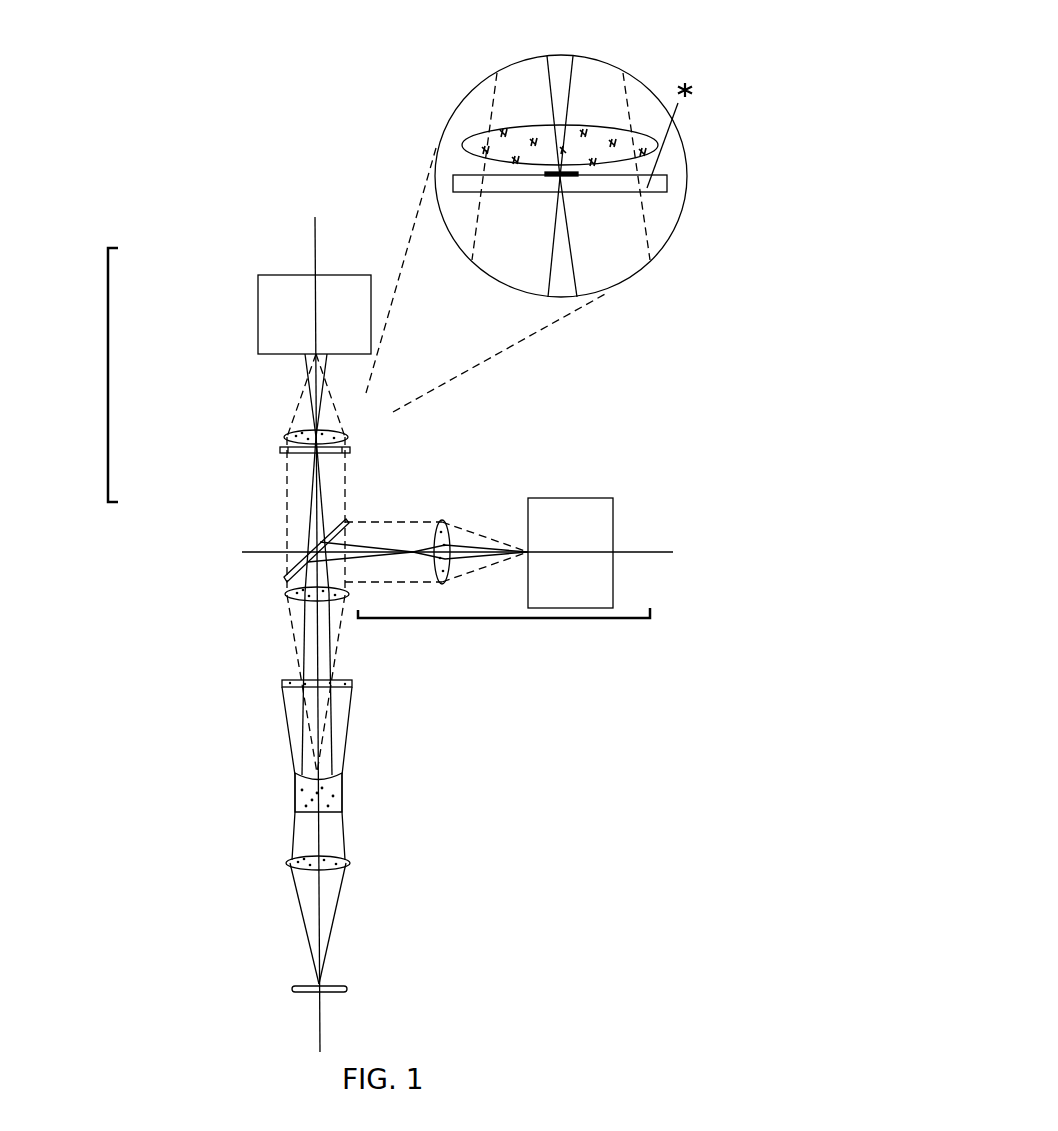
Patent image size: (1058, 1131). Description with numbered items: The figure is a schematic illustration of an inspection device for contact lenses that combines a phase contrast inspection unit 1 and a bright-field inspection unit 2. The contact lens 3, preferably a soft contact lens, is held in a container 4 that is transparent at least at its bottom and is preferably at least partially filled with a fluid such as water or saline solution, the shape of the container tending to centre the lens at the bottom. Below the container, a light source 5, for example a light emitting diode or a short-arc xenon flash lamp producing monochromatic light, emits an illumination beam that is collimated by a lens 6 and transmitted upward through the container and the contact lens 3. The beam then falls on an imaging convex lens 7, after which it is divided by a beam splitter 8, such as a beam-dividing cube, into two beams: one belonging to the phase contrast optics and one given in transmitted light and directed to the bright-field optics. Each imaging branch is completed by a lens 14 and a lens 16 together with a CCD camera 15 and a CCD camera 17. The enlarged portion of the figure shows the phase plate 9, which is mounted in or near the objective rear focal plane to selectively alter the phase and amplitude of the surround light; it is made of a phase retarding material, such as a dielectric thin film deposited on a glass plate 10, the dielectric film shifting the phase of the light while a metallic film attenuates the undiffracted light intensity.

The phase contrast inspection unit 1 is at (80, 375).
The bright-field inspection unit 2 is at (504, 639).
The contact lens 3 is at (337, 770).
The container 4 is at (283, 777).
The light source 5 is at (272, 973).
The lens 6 is at (272, 860).
The imaging convex lens 7 is at (270, 593).
The beam splitter 8 is at (347, 520).
The phase plate 9 is at (726, 97).
The glass plate 10 is at (625, 161).
The lens 14 is at (445, 517).
The CCD camera 15 is at (568, 490).
The lens 16 is at (278, 430).
The CCD camera 17 is at (260, 345).